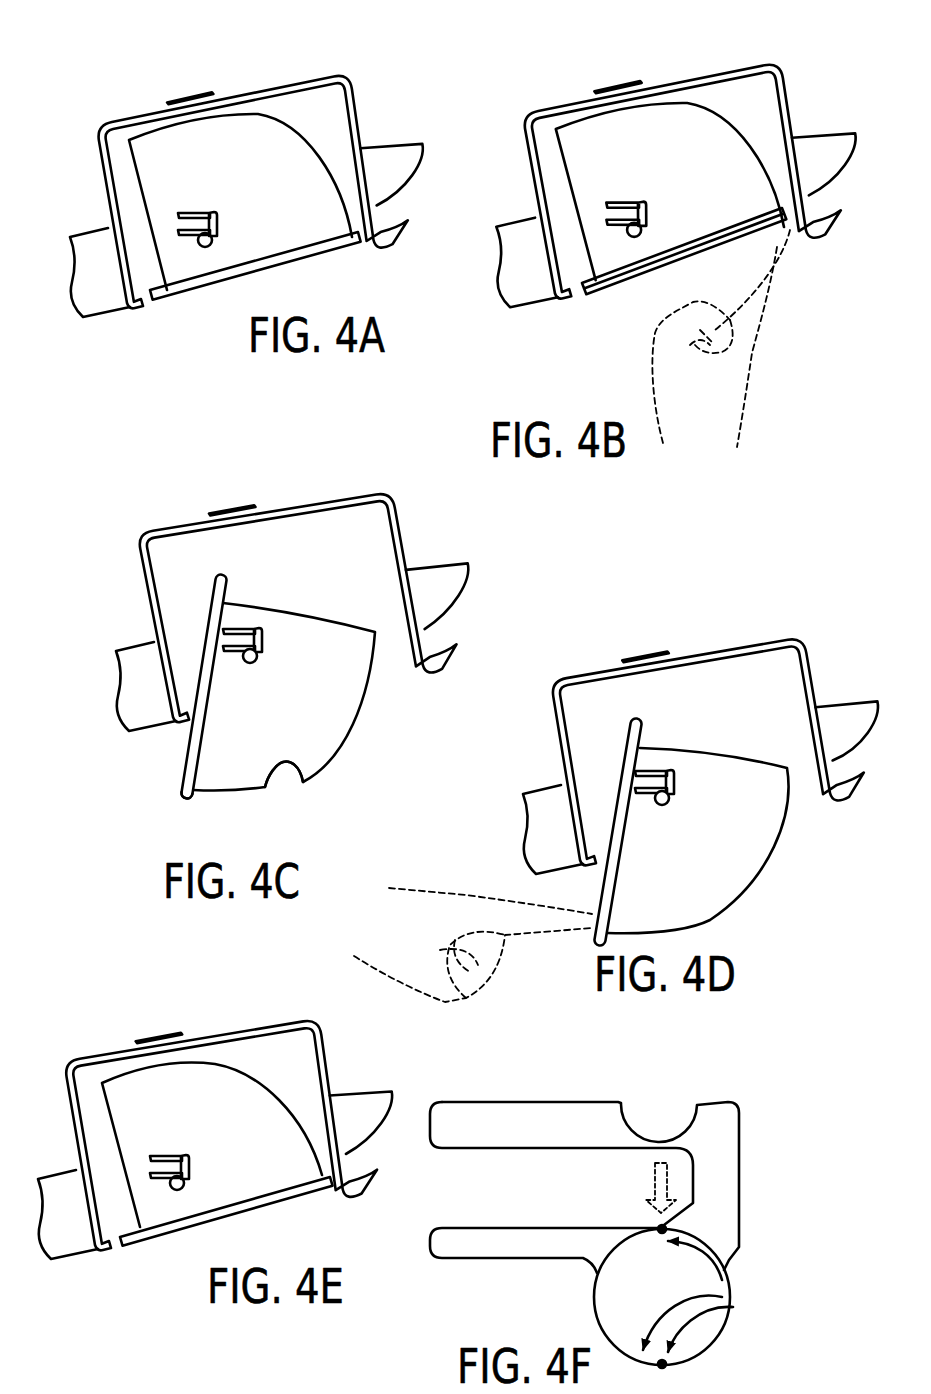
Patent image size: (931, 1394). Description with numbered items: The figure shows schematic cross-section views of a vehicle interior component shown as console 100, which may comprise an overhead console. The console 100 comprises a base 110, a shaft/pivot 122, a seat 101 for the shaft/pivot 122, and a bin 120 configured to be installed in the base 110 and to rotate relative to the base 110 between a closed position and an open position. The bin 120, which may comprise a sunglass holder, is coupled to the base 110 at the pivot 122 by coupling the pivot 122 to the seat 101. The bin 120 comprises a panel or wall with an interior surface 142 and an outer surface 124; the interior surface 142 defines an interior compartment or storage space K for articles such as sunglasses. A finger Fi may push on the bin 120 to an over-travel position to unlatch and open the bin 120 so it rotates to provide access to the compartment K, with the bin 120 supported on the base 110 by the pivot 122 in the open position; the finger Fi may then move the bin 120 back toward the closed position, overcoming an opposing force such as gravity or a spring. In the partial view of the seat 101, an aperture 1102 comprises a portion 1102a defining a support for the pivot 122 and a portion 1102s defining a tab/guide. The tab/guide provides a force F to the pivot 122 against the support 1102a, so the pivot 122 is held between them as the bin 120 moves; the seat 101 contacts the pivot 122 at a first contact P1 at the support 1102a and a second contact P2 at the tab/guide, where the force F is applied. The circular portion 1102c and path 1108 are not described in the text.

In FIG. 4A, the console 100 is at (128, 78).
In FIG. 4A, the base 110 is at (232, 192).
In FIG. 4B, the base 110 is at (675, 183).
In FIG. 4C, the base 110 is at (262, 606).
In FIG. 4A, the seat 101 is at (196, 202).
In FIG. 4F, the seat 101 is at (660, 1212).
In FIG. 4A, the aperture 1102 is at (128, 207).
In FIG. 4F, the aperture 1102 is at (654, 1187).
In FIG. 4F, the portion defining tab/guide 1102s is at (774, 1194).
In FIG. 4F, the clip arm circular portion 1102c is at (740, 1297).
In FIG. 4F, the support 1102a is at (772, 1373).
In FIG. 4F, the rotation path 1108 is at (770, 1311).
In FIG. 4A, the bin 120 is at (199, 320).
In FIG. 4B, the bin 120 is at (640, 302).
In FIG. 4C, the bin 120 is at (142, 694).
In FIG. 4D, the bin 120 is at (571, 831).
In FIG. 4E, the bin 120 is at (185, 1265).
In FIG. 4A, the shaft/pivot 122 is at (125, 298).
In FIG. 4B, the shaft/pivot 122 is at (568, 288).
In FIG. 4C, the shaft/pivot 122 is at (157, 633).
In FIG. 4F, the shaft/pivot 122 is at (773, 1240).
In FIG. 4C, the outer surface 124 is at (140, 797).
In FIG. 4C, the interior surface 142 is at (180, 809).
In FIG. 4C, the space K is at (216, 729).
In FIG. 4B, the finger Fi is at (739, 338).
In FIG. 4D, the finger Fi is at (473, 917).
In FIG. 4F, the force F is at (656, 1188).
In FIG. 4F, the first contact P1 is at (791, 1313).
In FIG. 4F, the second contact P2 is at (747, 1297).